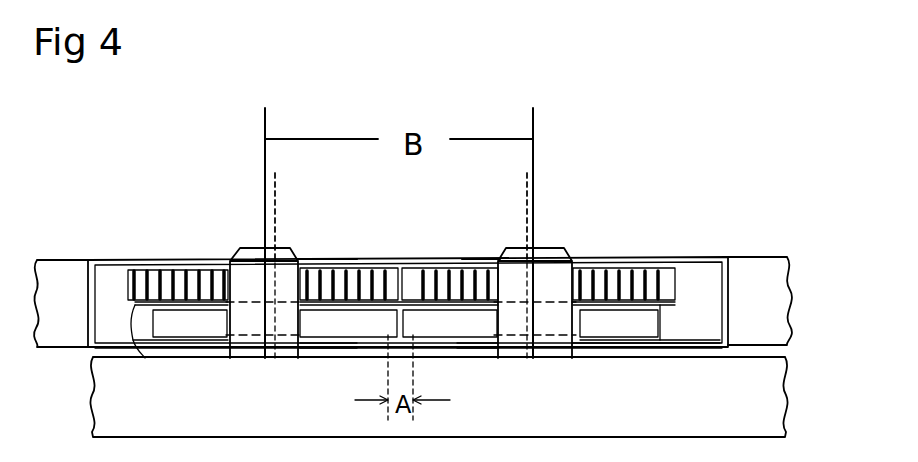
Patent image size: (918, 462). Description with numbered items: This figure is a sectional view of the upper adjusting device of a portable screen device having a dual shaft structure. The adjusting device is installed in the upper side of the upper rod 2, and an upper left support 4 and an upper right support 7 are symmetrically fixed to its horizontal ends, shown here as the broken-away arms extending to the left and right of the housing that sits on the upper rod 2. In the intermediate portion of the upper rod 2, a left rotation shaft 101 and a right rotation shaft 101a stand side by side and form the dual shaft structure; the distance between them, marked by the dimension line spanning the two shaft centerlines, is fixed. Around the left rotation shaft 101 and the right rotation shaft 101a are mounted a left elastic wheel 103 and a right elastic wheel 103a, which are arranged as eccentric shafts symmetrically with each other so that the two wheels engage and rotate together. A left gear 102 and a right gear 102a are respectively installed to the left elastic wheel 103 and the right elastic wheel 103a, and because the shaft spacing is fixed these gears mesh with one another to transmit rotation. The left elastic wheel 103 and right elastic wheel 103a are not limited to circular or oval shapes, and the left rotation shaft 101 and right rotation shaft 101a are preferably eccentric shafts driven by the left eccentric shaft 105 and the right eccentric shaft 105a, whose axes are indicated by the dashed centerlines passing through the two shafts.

The upper rod 2 is at (768, 410).
The upper left support 4 is at (70, 274).
The upper right support 7 is at (762, 272).
The left rotation shaft 101 is at (262, 264).
The right rotation shaft 101a is at (556, 254).
The left gear 102 is at (143, 358).
The right gear 102a is at (617, 318).
The left elastic wheel 103 is at (203, 330).
The right elastic wheel 103a is at (442, 327).
The left eccentric shaft 105 is at (277, 190).
The right eccentric shaft 105a is at (526, 194).